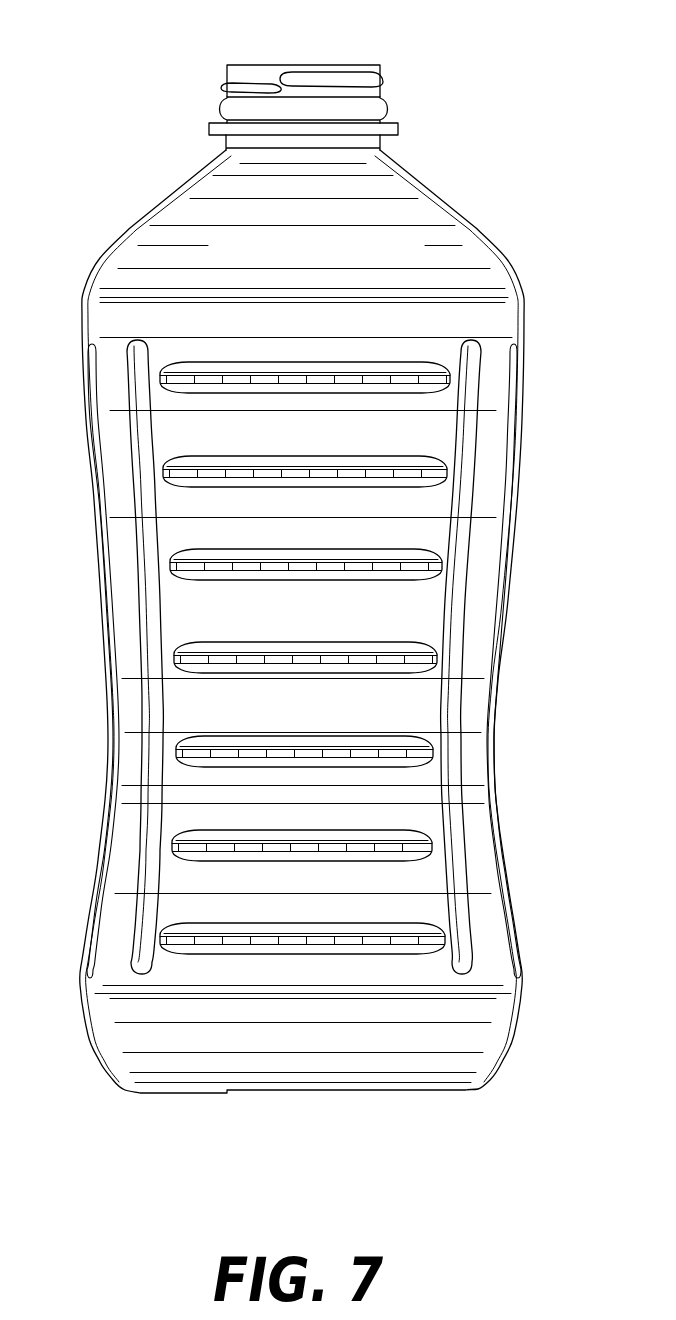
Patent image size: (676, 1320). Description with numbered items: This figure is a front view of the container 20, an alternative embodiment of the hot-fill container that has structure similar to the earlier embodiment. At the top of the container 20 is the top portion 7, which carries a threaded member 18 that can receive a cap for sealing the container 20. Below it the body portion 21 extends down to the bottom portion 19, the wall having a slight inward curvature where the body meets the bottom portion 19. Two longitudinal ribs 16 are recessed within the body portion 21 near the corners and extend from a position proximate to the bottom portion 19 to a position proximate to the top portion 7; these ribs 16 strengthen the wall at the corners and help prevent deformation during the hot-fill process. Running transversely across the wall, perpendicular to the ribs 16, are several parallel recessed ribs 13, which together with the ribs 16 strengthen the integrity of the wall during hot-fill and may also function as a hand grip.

The top portion 7 is at (171, 215).
The ribs 13 is at (416, 360).
The ribs 16 is at (139, 447).
The threaded member 18 is at (380, 73).
The bottom portion 19 is at (465, 1040).
The container 20 is at (551, 192).
The body portion 21 is at (126, 718).